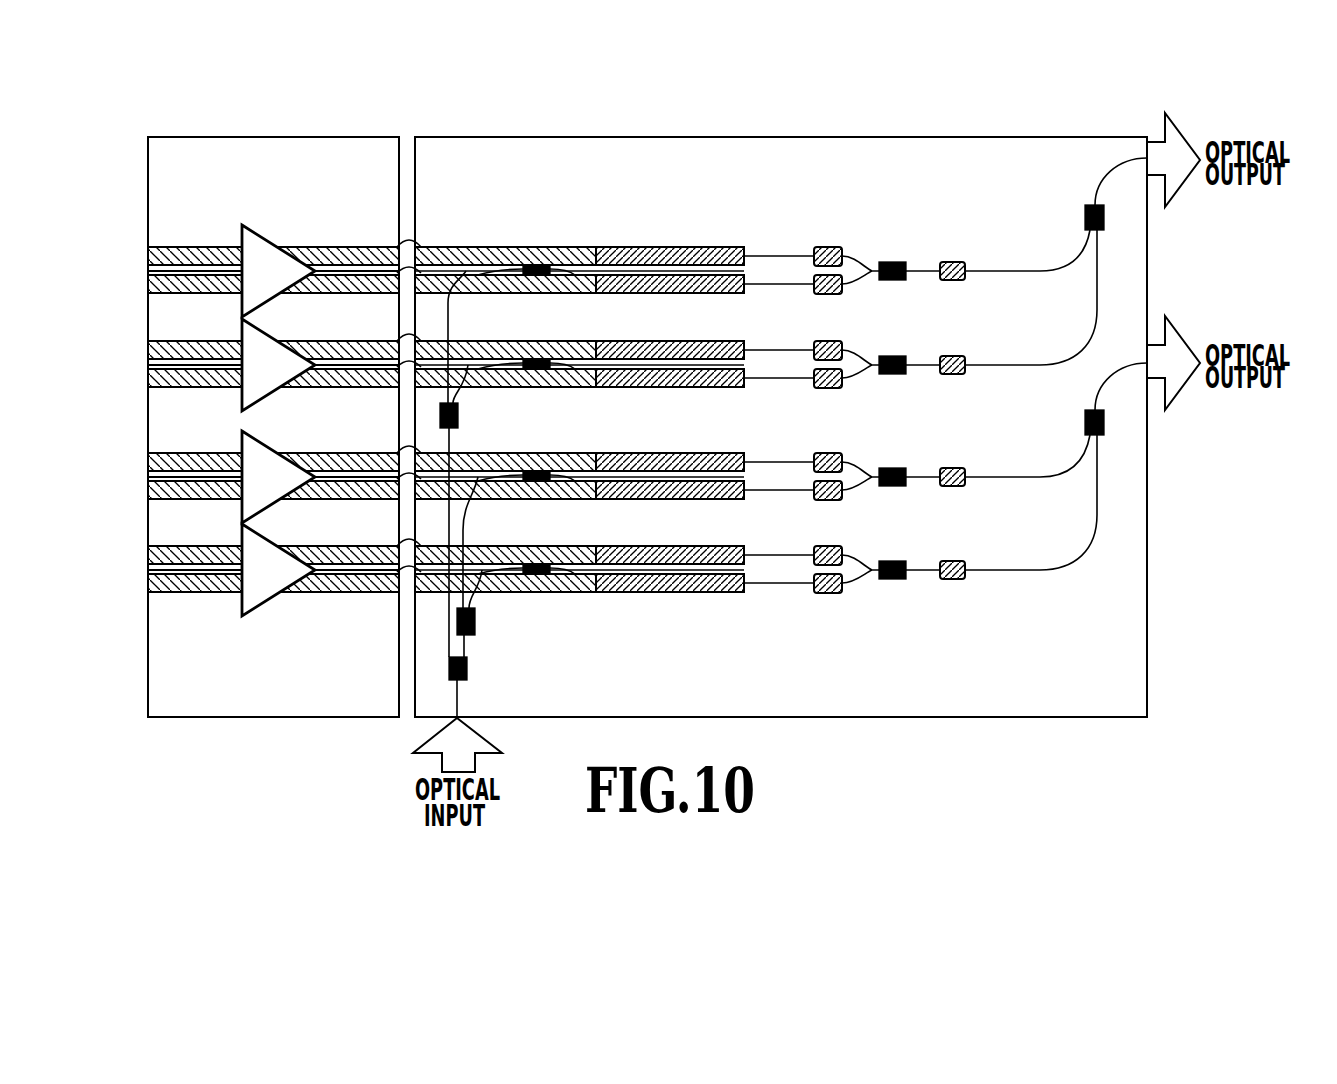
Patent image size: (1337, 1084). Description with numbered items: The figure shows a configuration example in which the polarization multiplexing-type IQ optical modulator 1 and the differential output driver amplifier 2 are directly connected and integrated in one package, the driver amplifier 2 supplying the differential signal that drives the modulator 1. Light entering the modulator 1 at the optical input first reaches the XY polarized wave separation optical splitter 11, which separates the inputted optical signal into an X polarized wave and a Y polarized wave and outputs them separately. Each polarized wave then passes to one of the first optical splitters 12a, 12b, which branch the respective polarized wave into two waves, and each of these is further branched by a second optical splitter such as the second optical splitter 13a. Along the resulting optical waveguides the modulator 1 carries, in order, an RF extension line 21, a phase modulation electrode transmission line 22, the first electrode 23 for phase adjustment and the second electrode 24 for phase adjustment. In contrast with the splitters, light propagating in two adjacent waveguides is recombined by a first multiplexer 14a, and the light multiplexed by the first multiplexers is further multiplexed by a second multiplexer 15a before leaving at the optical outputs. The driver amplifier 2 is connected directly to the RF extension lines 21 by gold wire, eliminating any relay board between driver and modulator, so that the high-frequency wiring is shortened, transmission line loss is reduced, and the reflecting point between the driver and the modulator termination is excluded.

The polarization multiplexing-type IQ optical modulator 1 is at (903, 107).
The differential output driver amplifier 2 is at (308, 107).
The XY polarized wave separation optical splitter 11 is at (468, 668).
The first optical splitter 12a is at (460, 414).
The first optical splitter 12b is at (477, 620).
The second optical splitter 13a is at (538, 268).
The first multiplexer 14a is at (894, 270).
The second multiplexer 15a is at (1086, 218).
The RF extension line 21 is at (464, 257).
The phase modulation electrode transmission line 22 is at (676, 257).
The first electrode for phase adjustment 23 is at (827, 256).
The second electrode for phase adjustment 24 is at (953, 270).